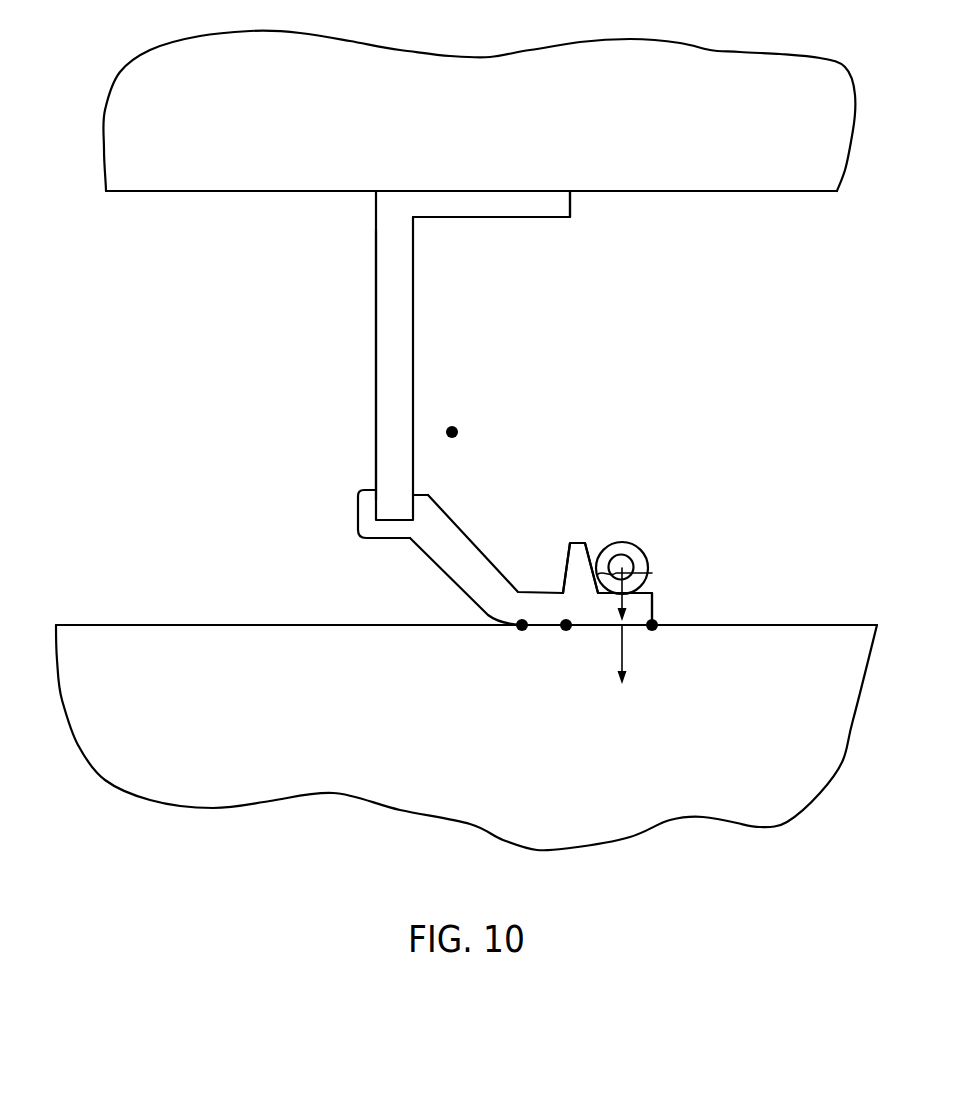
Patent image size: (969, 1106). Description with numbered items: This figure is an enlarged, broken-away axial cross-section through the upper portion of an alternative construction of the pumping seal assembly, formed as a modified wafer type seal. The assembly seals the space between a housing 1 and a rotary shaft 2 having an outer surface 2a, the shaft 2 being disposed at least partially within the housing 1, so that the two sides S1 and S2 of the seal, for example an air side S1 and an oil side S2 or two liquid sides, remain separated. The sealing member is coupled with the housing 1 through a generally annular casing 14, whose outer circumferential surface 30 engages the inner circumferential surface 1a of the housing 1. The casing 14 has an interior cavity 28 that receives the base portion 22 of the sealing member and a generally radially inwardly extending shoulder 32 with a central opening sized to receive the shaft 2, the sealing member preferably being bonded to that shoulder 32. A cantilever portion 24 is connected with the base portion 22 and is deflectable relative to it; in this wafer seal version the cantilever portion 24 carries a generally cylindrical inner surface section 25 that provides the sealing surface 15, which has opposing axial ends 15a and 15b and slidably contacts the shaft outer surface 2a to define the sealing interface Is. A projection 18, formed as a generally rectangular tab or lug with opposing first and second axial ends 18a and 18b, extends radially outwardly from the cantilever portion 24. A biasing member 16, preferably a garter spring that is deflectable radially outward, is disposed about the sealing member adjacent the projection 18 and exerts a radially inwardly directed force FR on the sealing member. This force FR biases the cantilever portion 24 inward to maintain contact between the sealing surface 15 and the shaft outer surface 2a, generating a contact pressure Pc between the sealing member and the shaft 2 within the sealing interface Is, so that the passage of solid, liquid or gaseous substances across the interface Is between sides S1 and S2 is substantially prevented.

The housing 1 is at (781, 66).
The inner circumferential surface of the housing 1a is at (757, 192).
The rotary shaft 2 is at (114, 585).
The outer surface of the shaft 2a is at (205, 625).
The casing 14 is at (426, 282).
The sealing surface 15 is at (593, 630).
The first axial end of the sealing surface 15a is at (518, 628).
The second axial end of the sealing surface 15b is at (660, 622).
The biasing member 16 is at (665, 545).
The projection 18 is at (562, 481).
The first axial end of the projection 18a is at (566, 560).
The second axial end of the projection 18b is at (588, 548).
The base portion 22 is at (371, 520).
The cantilever portion 24 is at (467, 532).
The cylindrical inner surface section 25 is at (652, 634).
The interior cavity 28 is at (458, 430).
The outer circumferential surface of the casing 30 is at (518, 191).
The shoulder 32 is at (390, 298).
The radially-inwardly directed force FR is at (638, 576).
The contact pressure Pc is at (635, 634).
The sealing interface Is is at (566, 632).
The first side of the seal S1 is at (790, 407).
The second side of the seal S2 is at (156, 398).